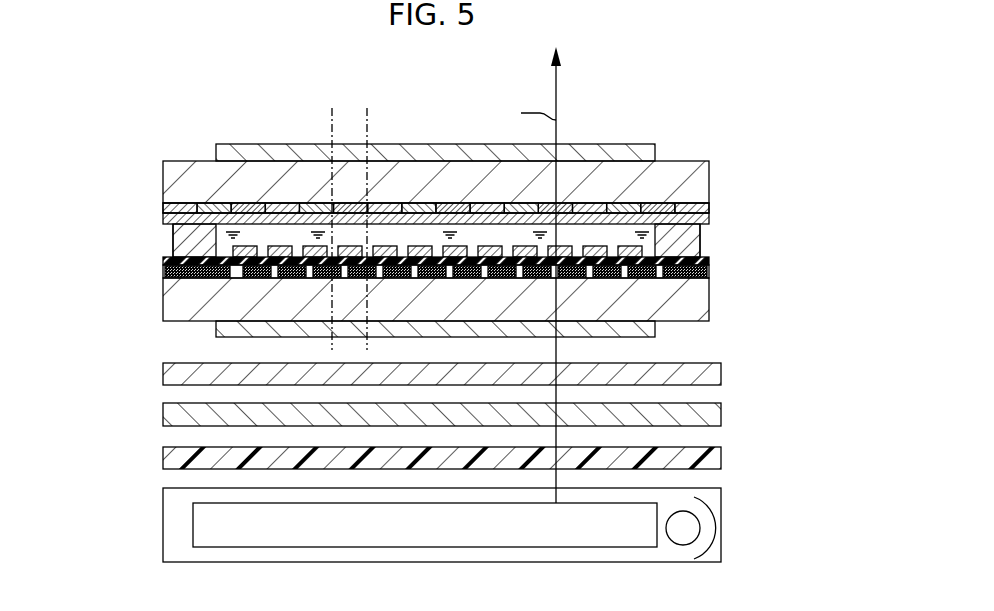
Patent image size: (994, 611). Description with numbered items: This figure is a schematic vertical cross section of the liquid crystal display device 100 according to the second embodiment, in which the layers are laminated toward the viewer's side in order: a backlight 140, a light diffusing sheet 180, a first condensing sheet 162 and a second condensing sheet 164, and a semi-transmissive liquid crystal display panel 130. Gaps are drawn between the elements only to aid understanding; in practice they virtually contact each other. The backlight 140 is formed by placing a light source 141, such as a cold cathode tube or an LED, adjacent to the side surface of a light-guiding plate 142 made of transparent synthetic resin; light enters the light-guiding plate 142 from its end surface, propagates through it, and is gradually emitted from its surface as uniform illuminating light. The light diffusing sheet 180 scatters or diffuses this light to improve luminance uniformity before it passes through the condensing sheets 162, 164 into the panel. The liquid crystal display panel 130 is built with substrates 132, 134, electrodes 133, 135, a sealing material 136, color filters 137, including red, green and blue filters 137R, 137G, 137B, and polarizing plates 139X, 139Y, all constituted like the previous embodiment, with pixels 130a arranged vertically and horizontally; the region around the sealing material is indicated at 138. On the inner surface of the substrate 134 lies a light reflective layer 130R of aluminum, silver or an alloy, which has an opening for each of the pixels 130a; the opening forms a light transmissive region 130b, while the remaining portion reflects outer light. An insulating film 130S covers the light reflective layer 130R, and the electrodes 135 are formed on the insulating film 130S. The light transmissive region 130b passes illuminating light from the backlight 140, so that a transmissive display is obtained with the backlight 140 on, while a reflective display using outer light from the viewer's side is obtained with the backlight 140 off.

The liquid crystal display device 100 is at (217, 66).
The liquid crystal display panel 130 is at (793, 142).
The pixel 130a is at (367, 114).
The light transmissive region 130b is at (426, 247).
The insulating film 130S is at (709, 268).
The light reflective layer 130R is at (709, 282).
The substrate 132 is at (163, 175).
The electrode 133 is at (160, 218).
The substrate 134 is at (163, 310).
The electrode 135 is at (163, 279).
The sealing material 136 is at (173, 238).
The color filter 137 is at (709, 208).
The red color filter 137R is at (560, 205).
The green color filter 137G is at (593, 205).
The blue color filter 137B is at (630, 205).
The sealing member 138 is at (250, 248).
The polarizing plate 139X is at (657, 157).
The polarizing plate 139Y is at (655, 330).
The backlight 140 is at (728, 521).
The light source 141 is at (675, 546).
The light-guiding plate 142 is at (193, 520).
The first condensing sheet 162 is at (721, 413).
The second condensing sheet 164 is at (721, 373).
The light diffusing sheet 180 is at (721, 457).